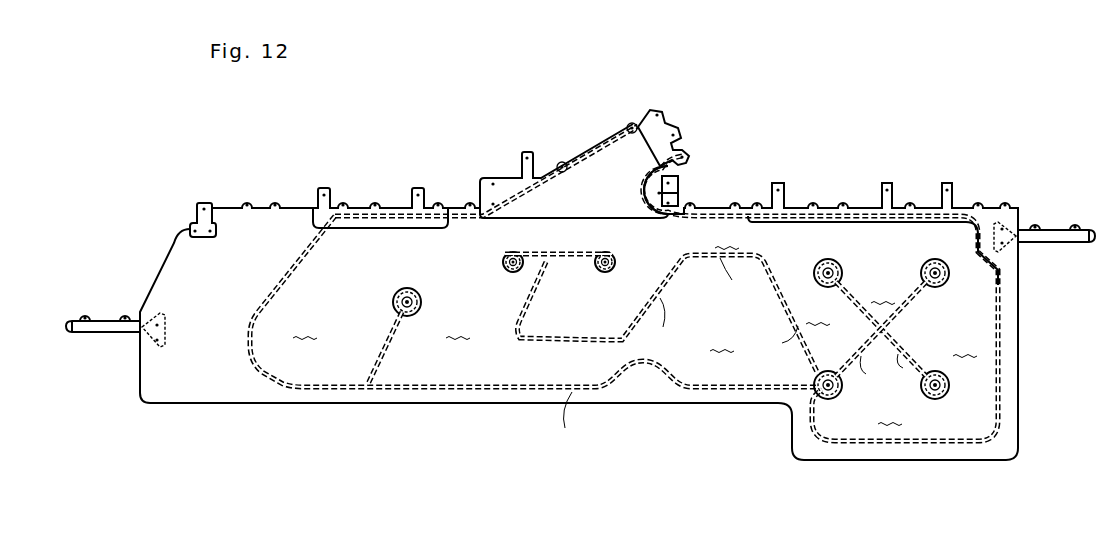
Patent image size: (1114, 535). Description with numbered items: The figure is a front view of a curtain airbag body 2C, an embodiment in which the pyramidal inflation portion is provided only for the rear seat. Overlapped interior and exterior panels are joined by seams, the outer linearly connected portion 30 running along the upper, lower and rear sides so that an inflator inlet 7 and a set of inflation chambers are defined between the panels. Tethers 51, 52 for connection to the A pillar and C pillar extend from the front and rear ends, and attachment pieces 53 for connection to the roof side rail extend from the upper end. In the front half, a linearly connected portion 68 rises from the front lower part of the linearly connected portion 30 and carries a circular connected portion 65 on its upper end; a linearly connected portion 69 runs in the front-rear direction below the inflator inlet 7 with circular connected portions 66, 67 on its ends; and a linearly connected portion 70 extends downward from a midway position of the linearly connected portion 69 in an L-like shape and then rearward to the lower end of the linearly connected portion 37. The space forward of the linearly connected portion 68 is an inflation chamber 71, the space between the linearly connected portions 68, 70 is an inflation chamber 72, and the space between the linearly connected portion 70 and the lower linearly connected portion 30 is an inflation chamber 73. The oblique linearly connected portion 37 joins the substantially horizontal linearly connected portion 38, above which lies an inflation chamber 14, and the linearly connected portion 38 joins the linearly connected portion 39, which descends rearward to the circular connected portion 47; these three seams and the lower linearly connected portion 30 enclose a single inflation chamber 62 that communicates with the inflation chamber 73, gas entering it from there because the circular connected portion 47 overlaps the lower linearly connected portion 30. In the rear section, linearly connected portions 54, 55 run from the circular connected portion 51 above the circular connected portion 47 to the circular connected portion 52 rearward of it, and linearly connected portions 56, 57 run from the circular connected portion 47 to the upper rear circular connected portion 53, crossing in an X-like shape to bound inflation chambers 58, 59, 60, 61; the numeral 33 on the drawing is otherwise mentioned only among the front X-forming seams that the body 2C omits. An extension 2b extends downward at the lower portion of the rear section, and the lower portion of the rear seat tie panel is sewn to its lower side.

The curtain airbag body 2C is at (853, 137).
The extension 2b is at (932, 460).
The inflator inlet 7 is at (638, 170).
The inflation chamber 14 is at (726, 235).
The linearly connected portion 30 is at (560, 162).
The linearly connected portion 33 is at (950, 284).
The linearly connected portion 37 is at (667, 322).
The linearly connected portion 38 is at (733, 280).
The linearly connected portion 39 is at (784, 348).
The circular connected portion 47 is at (838, 398).
The tether 51 is at (95, 337).
The tether 52 is at (1045, 228).
The attachment piece 53 is at (198, 212).
The linearly connected portion 54 is at (862, 311).
The linearly connected portion 55 is at (902, 373).
The linearly connected portion 56 is at (867, 377).
The linearly connected portion 57 is at (908, 306).
The inflation chamber 58 is at (882, 290).
The inflation chamber 59 is at (964, 343).
The inflation chamber 60 is at (889, 411).
The inflation chamber 61 is at (817, 311).
The inflation chamber 62 is at (721, 338).
The circular connected portion 65 is at (392, 304).
The circular connected portion 66 is at (502, 263).
The circular connected portion 67 is at (617, 262).
The linearly connected portion 68 is at (393, 343).
The linearly connected portion 69 is at (570, 252).
The linearly connected portion 70 is at (535, 338).
The inflation chamber 71 is at (304, 325).
The inflation chamber 72 is at (457, 325).
The inflation chamber 73 is at (562, 423).